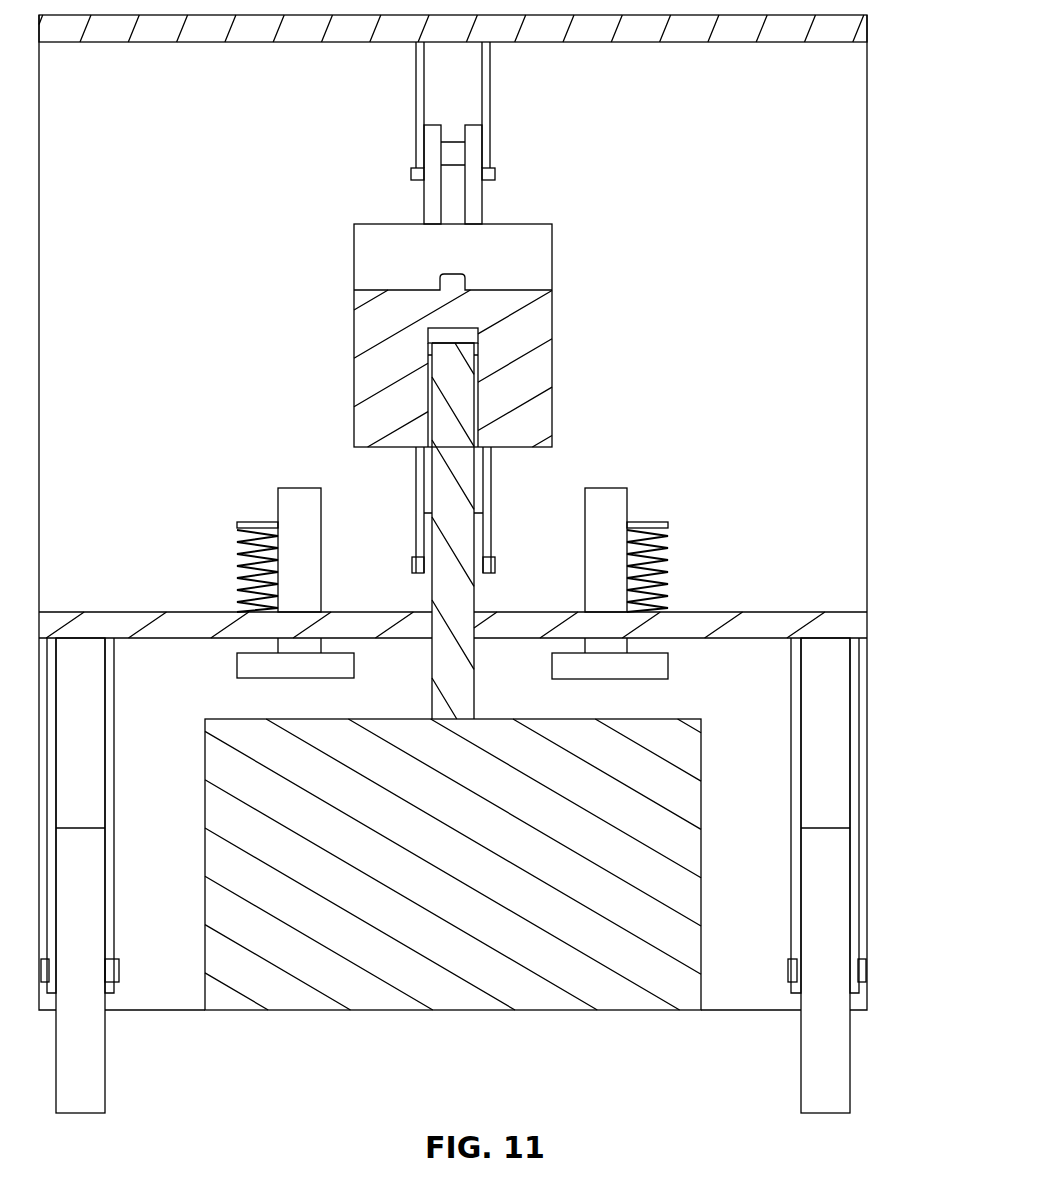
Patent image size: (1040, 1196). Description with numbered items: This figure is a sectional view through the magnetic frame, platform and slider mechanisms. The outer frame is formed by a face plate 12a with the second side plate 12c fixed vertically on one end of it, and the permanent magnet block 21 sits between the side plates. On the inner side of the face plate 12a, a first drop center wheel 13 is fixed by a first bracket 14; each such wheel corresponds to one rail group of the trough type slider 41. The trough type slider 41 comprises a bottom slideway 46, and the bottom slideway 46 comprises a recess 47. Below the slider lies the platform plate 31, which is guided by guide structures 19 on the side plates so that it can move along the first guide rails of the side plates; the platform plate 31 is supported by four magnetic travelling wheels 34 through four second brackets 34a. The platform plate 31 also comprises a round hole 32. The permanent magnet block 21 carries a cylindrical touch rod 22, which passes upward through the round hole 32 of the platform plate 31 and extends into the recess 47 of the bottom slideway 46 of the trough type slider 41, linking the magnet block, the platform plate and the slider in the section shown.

The face plate 12a is at (252, 28).
The second side plate 12c is at (820, 262).
The first drop center wheel 13 is at (430, 192).
The first bracket 14 is at (485, 77).
The guide structure 19 is at (177, 520).
The permanent magnet block 21 is at (433, 967).
The cylindrical touch rod 22 is at (455, 535).
The platform plate 31 is at (843, 625).
The round hole 32 is at (428, 620).
The magnetic travelling wheel 34 is at (84, 1088).
The second bracket 34a is at (854, 799).
The trough type slider 41 is at (383, 369).
The bottom slideway 46 is at (478, 390).
The recess 47 is at (455, 337).